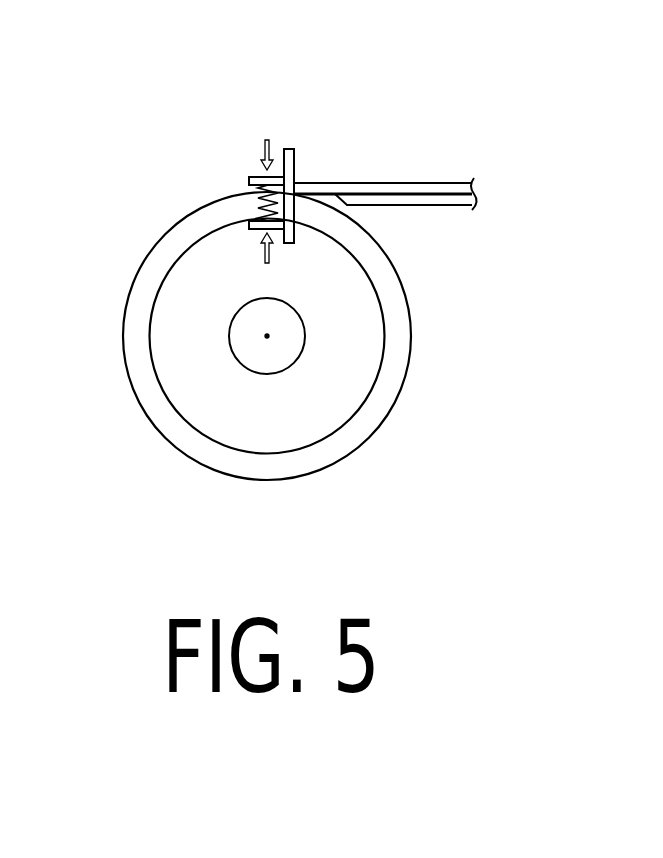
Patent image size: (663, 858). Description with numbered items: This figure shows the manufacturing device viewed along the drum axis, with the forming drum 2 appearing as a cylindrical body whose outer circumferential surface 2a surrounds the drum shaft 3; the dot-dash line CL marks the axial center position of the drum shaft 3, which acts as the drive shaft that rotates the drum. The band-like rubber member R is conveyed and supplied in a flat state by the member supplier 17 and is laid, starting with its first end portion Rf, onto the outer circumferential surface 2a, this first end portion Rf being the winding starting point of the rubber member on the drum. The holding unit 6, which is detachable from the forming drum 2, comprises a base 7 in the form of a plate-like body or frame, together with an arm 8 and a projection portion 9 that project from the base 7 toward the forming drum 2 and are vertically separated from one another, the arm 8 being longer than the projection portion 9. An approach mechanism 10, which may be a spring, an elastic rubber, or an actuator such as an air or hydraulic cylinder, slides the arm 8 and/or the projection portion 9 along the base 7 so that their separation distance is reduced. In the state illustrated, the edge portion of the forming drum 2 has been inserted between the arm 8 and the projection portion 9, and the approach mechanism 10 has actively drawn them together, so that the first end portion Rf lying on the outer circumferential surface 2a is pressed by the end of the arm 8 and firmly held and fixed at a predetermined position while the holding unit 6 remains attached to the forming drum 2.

The forming drum 2 is at (142, 268).
The outer circumferential surface 2a is at (133, 403).
The drum shaft 3 is at (258, 351).
The axial center position CL is at (267, 336).
The holding unit 6 is at (257, 175).
The base 7 is at (292, 148).
The arm 8 is at (255, 176).
The projection portion 9 is at (253, 229).
The approach mechanism 10 is at (258, 195).
The band-like rubber member R is at (385, 180).
The member supplier 17 is at (413, 203).
The first end portion Rf is at (248, 188).